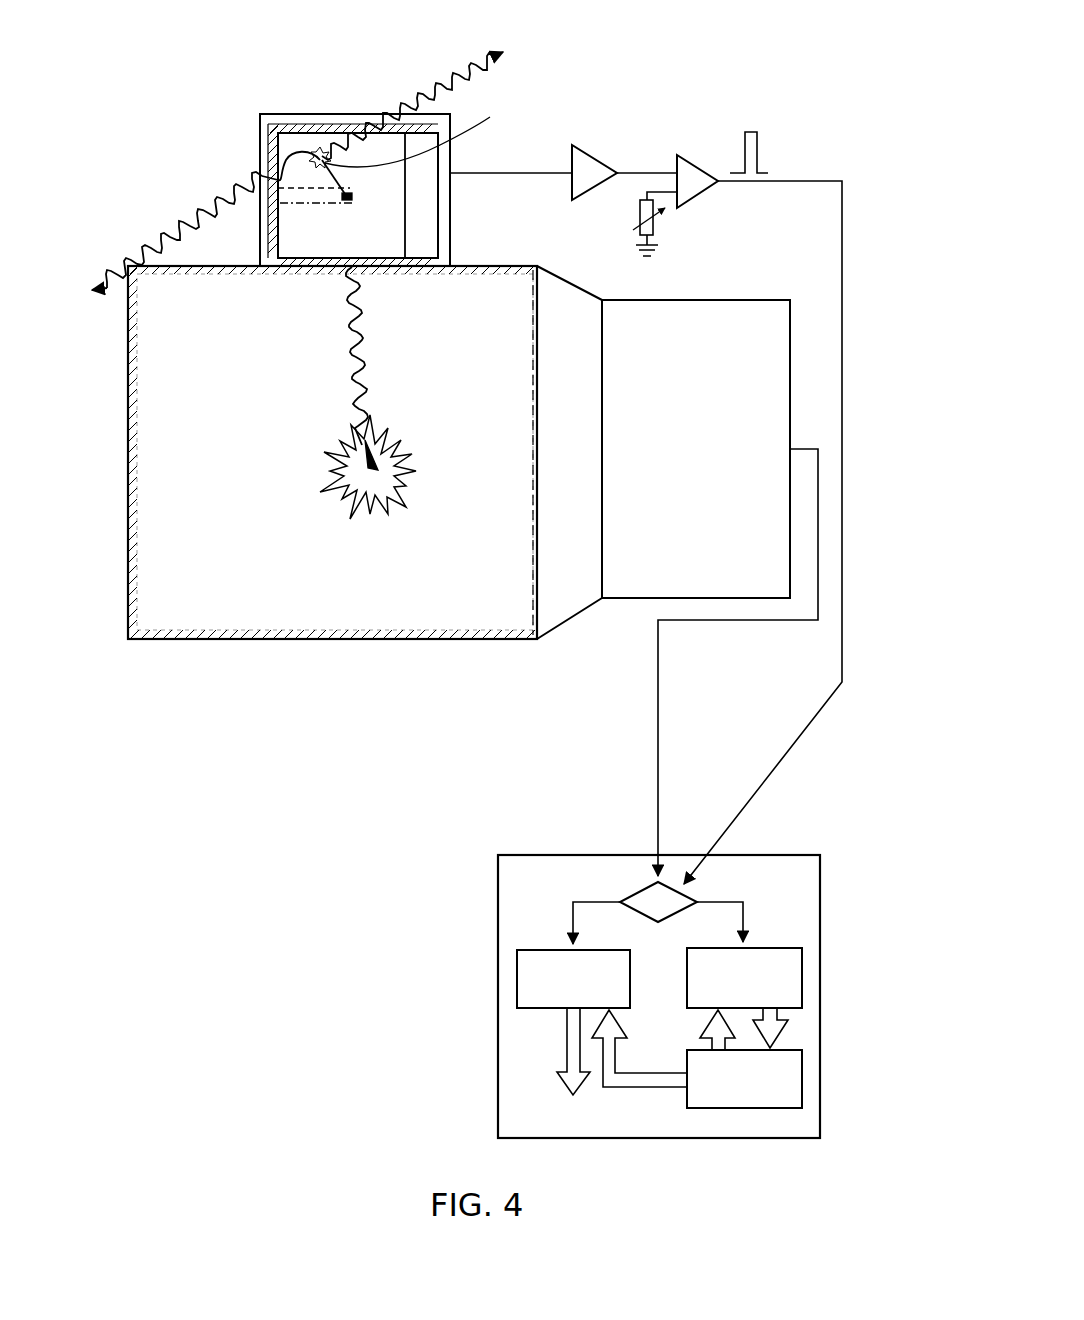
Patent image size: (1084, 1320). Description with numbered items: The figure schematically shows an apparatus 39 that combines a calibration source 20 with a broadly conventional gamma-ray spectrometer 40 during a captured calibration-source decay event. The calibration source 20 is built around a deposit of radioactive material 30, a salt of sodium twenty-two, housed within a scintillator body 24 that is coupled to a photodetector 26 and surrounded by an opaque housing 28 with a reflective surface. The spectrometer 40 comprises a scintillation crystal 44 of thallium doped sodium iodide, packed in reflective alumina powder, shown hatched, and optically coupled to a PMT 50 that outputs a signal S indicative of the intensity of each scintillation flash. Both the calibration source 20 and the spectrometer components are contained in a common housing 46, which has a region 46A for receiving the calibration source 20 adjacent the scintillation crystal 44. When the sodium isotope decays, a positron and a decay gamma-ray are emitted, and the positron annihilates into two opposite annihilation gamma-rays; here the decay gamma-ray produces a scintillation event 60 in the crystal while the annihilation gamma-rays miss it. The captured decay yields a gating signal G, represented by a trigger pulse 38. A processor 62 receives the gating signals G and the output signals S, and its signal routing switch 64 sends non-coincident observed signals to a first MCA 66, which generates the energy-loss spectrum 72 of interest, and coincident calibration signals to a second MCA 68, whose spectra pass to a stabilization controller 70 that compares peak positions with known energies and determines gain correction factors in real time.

The calibration source 20 is at (238, 167).
The scintillator body 24 is at (302, 142).
The photodetector 26 is at (427, 227).
The opaque housing 28 is at (265, 228).
The radioactive material 30 is at (354, 201).
The trigger pulse 38 is at (752, 130).
The apparatus 39 is at (710, 85).
The gamma-ray spectrometer 40 is at (365, 488).
The scintillation crystal 44 is at (335, 452).
The housing 46 is at (321, 640).
The region for receiving the calibration source 46A is at (272, 122).
The PMT 50 is at (712, 300).
The scintillation event 60 is at (416, 470).
The processor 62 is at (655, 974).
The signal routing switch 64 is at (693, 896).
The first MCA 66 is at (517, 978).
The second MCA 68 is at (802, 978).
The stabilization controller 70 is at (802, 1080).
The energy-loss spectrum 72 is at (573, 1070).